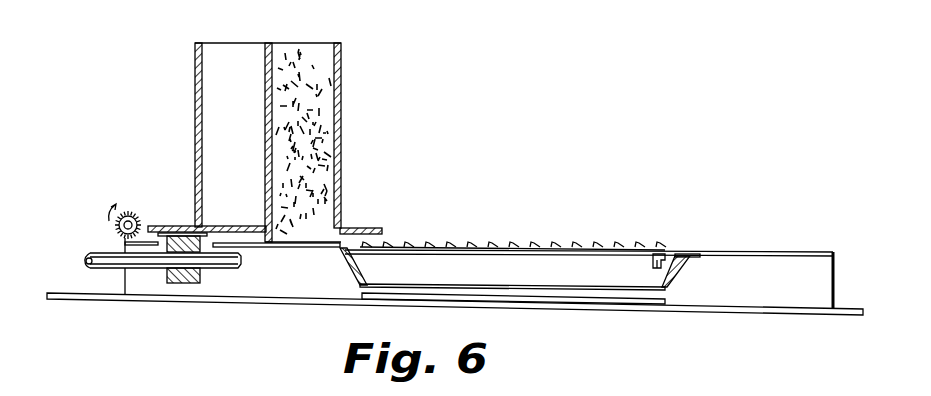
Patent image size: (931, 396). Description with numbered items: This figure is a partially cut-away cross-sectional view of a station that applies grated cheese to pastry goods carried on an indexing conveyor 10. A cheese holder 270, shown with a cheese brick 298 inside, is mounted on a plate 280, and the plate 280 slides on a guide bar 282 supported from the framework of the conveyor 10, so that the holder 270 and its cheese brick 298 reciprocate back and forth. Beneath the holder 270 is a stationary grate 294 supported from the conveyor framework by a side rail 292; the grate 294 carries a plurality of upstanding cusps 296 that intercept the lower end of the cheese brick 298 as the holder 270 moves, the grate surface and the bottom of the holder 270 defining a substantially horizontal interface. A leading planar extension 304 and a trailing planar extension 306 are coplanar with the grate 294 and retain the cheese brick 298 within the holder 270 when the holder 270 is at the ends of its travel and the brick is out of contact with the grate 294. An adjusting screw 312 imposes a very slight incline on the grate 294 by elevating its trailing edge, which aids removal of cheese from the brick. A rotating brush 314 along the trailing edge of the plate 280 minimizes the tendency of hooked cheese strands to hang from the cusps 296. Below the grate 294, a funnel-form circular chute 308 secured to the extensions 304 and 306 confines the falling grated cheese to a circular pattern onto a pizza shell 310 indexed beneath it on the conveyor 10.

The conveyor 10 is at (786, 314).
The guide bar 282 is at (92, 253).
The brush 314 is at (131, 212).
The cheese holder 270 is at (341, 128).
The cheese brick 298 is at (325, 90).
The plate 280 is at (372, 228).
The leading planar extension 304 is at (263, 250).
The grate 294 is at (607, 248).
The cusps 296 is at (533, 248).
The trailing planar extension 306 is at (773, 250).
The side rail 292 is at (816, 252).
The adjusting screw 312 is at (660, 256).
The chute 308 is at (682, 268).
The pizza shell 310 is at (650, 303).